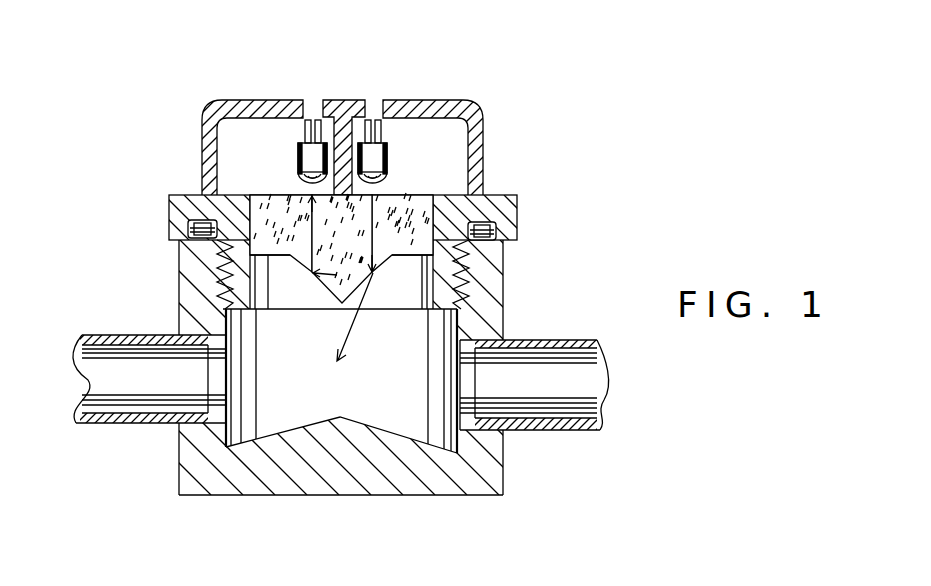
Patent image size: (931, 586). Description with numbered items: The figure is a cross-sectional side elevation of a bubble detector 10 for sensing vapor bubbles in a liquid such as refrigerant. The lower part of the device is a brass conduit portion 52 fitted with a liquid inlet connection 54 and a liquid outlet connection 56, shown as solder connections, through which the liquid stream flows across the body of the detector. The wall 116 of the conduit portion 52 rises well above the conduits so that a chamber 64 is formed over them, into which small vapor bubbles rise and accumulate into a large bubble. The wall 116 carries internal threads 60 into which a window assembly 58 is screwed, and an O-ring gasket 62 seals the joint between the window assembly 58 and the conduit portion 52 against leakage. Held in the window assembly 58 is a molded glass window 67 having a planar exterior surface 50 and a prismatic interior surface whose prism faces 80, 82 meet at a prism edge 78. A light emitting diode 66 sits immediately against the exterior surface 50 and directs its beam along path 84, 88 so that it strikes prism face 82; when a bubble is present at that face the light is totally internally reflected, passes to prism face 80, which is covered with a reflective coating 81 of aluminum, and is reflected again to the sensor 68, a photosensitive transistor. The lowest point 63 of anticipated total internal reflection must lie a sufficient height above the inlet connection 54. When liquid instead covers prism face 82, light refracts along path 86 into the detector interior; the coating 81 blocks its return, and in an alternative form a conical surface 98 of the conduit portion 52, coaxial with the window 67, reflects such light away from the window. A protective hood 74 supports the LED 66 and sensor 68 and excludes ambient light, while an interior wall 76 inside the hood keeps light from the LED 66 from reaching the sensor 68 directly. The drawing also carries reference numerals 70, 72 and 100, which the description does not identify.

The bubble detector 10 is at (162, 283).
The planar exterior surface 50 is at (273, 192).
The conduit portion 52 is at (487, 472).
The liquid inlet connection 54 is at (598, 437).
The liquid outlet connection 56 is at (108, 427).
The window assembly 58 is at (518, 218).
The internal threads 60 is at (458, 302).
The O-ring gasket 62 is at (490, 223).
The lowest point of total internal reflection 63 is at (375, 280).
The chamber 64 is at (412, 282).
The light emitting diode 66 is at (390, 152).
The window 67 is at (281, 233).
The sensor 68 is at (298, 150).
The leads 70 is at (317, 120).
The leads 72 is at (372, 120).
The protective hood 74 is at (483, 120).
The interior wall 76 is at (342, 113).
The prism edge 78 is at (376, 281).
The prism face 80 is at (305, 268).
The reflective coating 81 is at (313, 274).
The prism face 82 is at (392, 276).
The light beam path 84 is at (374, 221).
The refracted light path 86 is at (356, 327).
The light beam path 88 is at (342, 248).
The conical surface 98 is at (382, 430).
The apex 100 is at (340, 417).
The wall 116 is at (507, 267).